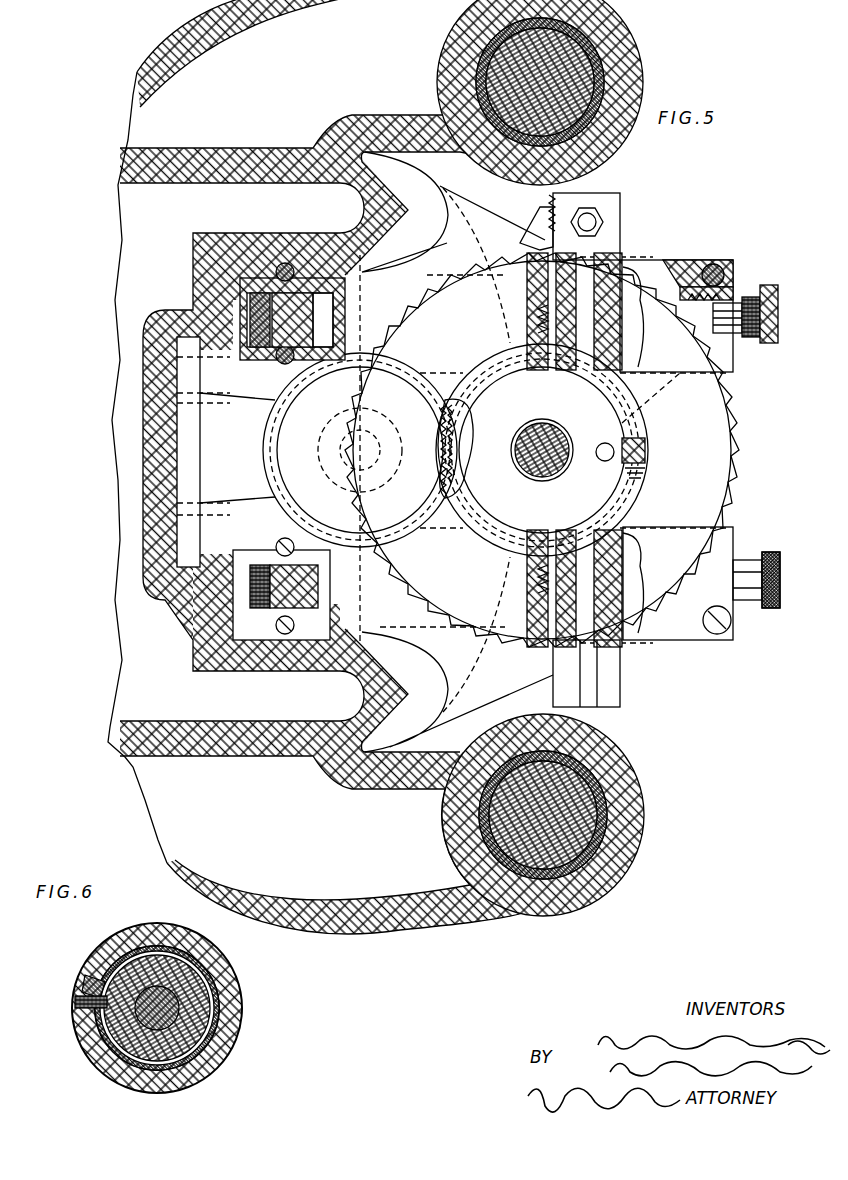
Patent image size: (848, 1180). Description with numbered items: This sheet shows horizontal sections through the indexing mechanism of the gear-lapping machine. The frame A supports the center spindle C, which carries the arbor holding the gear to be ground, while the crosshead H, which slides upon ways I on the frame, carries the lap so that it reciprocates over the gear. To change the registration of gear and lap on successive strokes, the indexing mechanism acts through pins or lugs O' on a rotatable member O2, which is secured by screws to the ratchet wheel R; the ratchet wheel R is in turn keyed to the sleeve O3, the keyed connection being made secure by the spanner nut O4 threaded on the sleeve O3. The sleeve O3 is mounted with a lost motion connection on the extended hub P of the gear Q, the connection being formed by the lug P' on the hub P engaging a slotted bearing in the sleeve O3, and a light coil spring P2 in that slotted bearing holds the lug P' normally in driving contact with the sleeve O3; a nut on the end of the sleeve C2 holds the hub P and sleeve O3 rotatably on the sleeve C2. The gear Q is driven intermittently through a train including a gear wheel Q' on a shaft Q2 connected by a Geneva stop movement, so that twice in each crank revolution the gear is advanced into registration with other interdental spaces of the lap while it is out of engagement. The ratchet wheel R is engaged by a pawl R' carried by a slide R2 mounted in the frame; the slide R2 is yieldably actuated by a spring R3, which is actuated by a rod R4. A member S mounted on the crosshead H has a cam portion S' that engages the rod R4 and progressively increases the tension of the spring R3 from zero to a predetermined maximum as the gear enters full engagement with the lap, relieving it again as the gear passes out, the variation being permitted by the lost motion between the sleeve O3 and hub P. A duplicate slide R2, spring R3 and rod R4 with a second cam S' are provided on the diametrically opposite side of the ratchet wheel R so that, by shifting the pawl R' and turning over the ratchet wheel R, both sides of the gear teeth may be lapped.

In FIG. 5, the frame A is at (130, 165).
In FIG. 5, the crosshead H is at (625, 85).
In FIG. 5, the ways I is at (572, 50).
In FIG. 5, the cam member S is at (255, 426).
In FIG. 5, the cam portion S' is at (237, 459).
In FIG. 5, the ratchet wheel R is at (676, 438).
In FIG. 5, the pawl R' is at (529, 219).
In FIG. 5, the slide R2 is at (713, 264).
In FIG. 5, the spring R3 is at (730, 290).
In FIG. 5, the rod R4 is at (255, 318).
In FIG. 5, the gear Q is at (469, 448).
In FIG. 5, the gear wheel Q' is at (426, 443).
In FIG. 5, the shaft Q2 is at (340, 435).
In FIG. 5, the center spindle C is at (566, 442).
In FIG. 6, the center spindle C is at (205, 1005).
In FIG. 6, the sleeve C2 is at (128, 1052).
In FIG. 5, the pins or lugs O' is at (653, 443).
In FIG. 5, the rotatable member O2 is at (641, 410).
In FIG. 6, the sleeve O3 is at (140, 942).
In FIG. 5, the spanner nut O4 is at (598, 482).
In FIG. 6, the hub P is at (176, 1008).
In FIG. 6, the lug P' is at (75, 1011).
In FIG. 6, the coil spring P2 is at (88, 988).